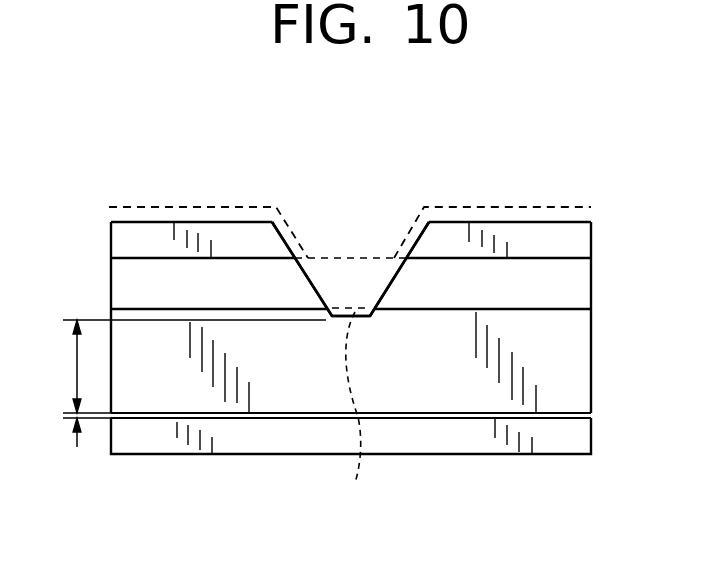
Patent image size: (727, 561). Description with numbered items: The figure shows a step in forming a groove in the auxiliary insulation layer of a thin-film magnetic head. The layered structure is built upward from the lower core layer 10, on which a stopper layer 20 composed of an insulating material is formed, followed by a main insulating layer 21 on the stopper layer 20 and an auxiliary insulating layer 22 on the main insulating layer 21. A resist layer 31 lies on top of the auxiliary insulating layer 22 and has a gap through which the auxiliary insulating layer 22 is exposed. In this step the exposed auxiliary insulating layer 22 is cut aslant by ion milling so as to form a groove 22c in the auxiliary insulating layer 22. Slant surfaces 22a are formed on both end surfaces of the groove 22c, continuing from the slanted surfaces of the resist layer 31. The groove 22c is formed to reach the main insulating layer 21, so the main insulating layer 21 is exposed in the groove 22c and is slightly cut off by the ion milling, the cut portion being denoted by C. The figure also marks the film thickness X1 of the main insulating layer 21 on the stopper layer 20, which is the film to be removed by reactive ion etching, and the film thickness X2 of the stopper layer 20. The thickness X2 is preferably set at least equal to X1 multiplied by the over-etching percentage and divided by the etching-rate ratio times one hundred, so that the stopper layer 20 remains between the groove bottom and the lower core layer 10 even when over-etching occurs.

The lower core layer 10 is at (573, 440).
The stopper layer 20 is at (563, 417).
The main insulating layer 21 is at (558, 343).
The auxiliary insulating layer 22 is at (140, 282).
The slant surfaces 22a is at (314, 288).
The groove 22c is at (343, 293).
The resist layer 31 is at (142, 237).
The film thickness of the main insulating layer X1 is at (180, 366).
The film thickness of the stopper layer X2 is at (68, 425).
The portion slightly cut off by ion milling C is at (355, 419).